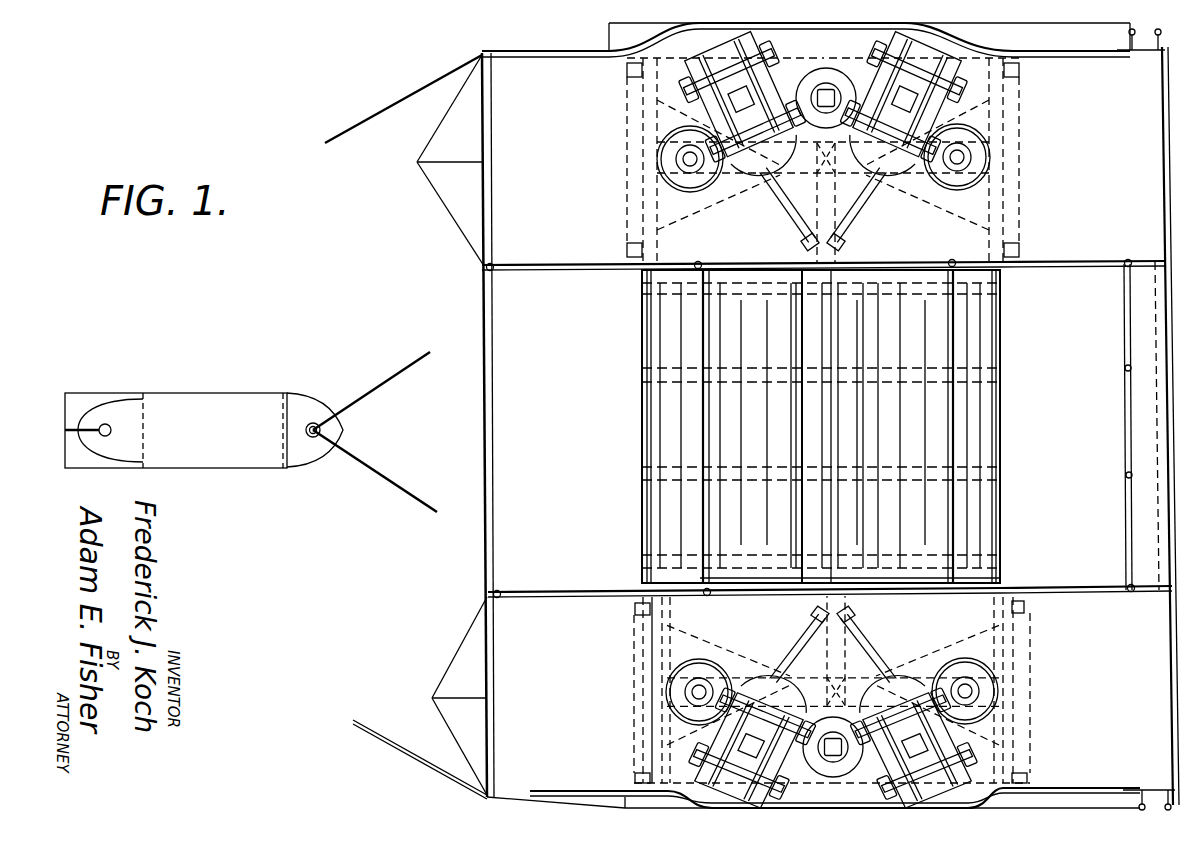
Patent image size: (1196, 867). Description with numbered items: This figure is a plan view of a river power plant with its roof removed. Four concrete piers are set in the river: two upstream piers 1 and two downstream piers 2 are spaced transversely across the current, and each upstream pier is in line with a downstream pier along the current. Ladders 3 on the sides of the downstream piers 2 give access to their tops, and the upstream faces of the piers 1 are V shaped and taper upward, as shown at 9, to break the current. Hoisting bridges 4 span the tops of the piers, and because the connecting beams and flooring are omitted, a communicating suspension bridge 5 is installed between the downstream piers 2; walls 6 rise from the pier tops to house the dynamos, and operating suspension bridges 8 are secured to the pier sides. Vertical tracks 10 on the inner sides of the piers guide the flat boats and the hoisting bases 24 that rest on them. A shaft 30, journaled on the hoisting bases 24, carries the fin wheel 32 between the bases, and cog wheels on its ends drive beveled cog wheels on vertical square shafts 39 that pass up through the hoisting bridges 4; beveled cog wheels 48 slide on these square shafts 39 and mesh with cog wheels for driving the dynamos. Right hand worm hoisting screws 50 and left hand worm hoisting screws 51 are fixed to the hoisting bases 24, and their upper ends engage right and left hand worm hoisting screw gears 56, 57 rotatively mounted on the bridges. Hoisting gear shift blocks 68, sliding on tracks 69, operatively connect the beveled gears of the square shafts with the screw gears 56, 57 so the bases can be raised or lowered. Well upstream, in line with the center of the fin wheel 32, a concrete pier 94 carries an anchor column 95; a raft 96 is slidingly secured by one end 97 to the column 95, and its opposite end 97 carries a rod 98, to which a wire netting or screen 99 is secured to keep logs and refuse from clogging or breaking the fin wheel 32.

The upstream pier 1 is at (534, 260).
The downstream pier 2 is at (1077, 258).
The ladder 3 is at (1160, 32).
The hoisting bridge 4 is at (995, 281).
The communicating suspension bridge 5 is at (1128, 431).
The wall 6 is at (1080, 58).
The operating suspension bridge 8 is at (1052, 42).
The V-shaped upstream side 9 is at (417, 166).
The track 10 is at (627, 73).
The hoisting base 24 is at (727, 175).
The shaft 30 is at (842, 584).
The fin wheel 32 is at (667, 437).
The square shaft 39 is at (819, 88).
The beveled cog wheel 48 is at (830, 74).
The right hand worm hoisting screw 50 is at (688, 160).
The left hand worm hoisting screw 51 is at (698, 693).
The right hand worm hoisting screw gear 56 is at (675, 184).
The left hand worm hoisting screw gear 57 is at (680, 683).
The hoisting gear shift block 68 is at (763, 172).
The track 69 is at (716, 42).
The concrete pier 94 is at (80, 405).
The anchor column 95 is at (112, 431).
The raft 96 is at (236, 455).
The raft end 97 is at (93, 443).
The rod 98 is at (314, 421).
The wire netting or screen 99 is at (392, 102).